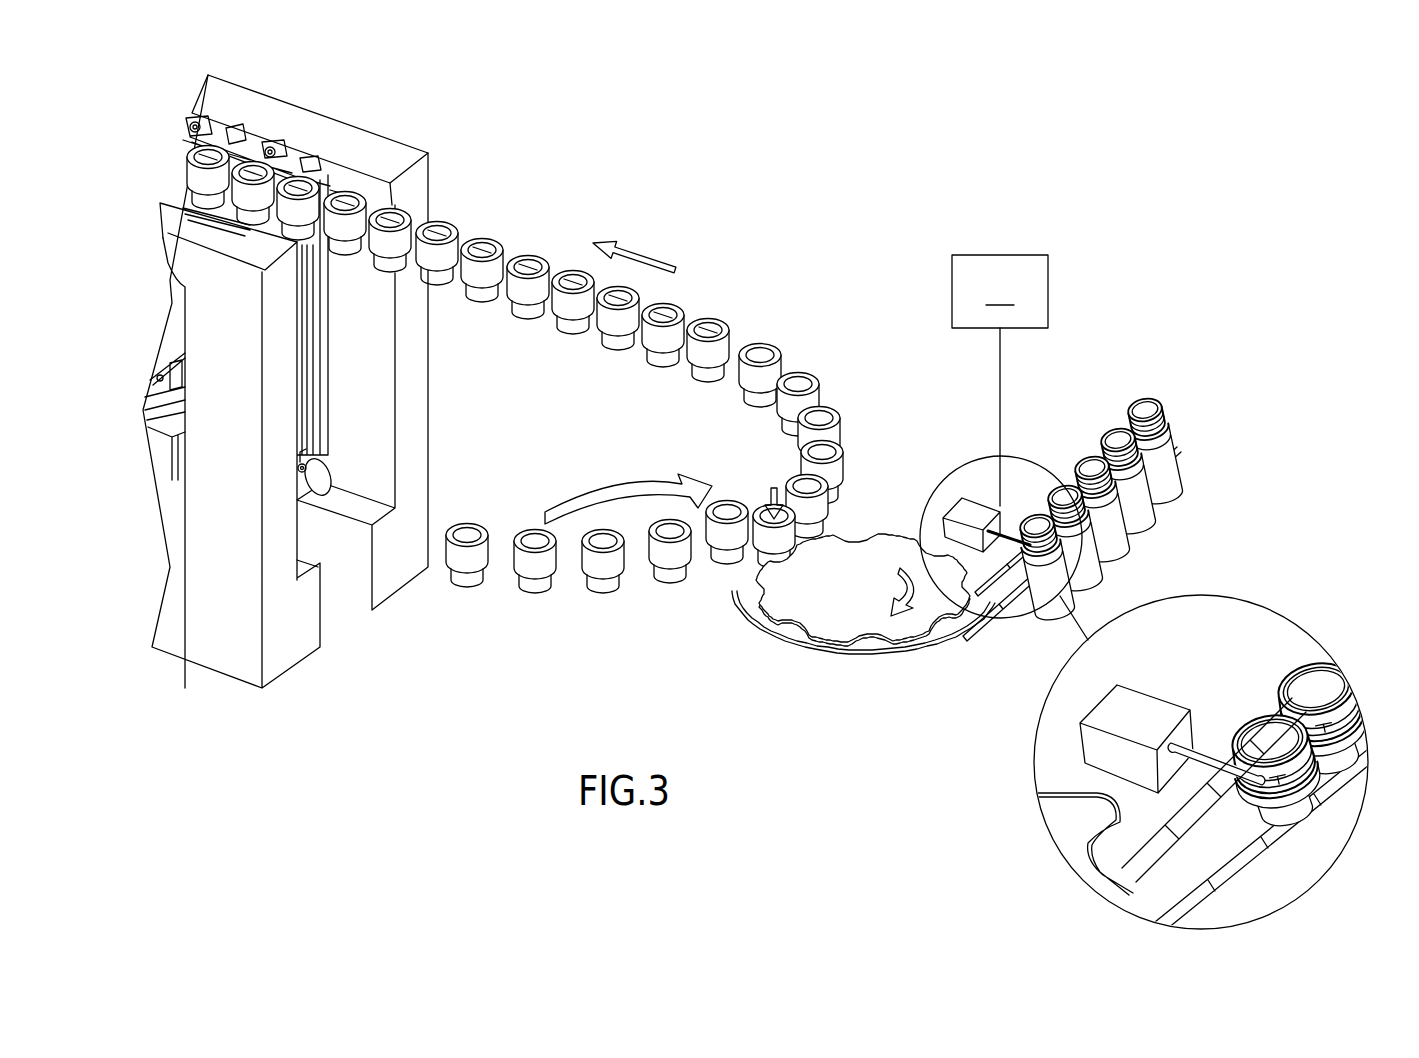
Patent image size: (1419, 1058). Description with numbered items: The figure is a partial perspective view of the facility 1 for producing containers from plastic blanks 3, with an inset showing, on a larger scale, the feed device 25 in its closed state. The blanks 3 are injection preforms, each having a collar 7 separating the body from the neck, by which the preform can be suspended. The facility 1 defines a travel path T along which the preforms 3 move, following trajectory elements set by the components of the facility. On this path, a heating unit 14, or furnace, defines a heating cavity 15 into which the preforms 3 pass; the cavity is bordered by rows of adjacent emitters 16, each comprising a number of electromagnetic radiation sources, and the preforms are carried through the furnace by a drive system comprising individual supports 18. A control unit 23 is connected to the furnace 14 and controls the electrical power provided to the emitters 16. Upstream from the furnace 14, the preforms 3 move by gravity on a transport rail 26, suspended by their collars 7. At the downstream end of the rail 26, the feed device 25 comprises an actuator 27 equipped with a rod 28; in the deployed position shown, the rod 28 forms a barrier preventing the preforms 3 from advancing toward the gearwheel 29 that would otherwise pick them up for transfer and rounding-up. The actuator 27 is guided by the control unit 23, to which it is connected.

The facility 1 is at (1112, 153).
The blanks 3 is at (1205, 667).
The collar 7 is at (1318, 778).
The heating unit 14 is at (388, 131).
The heating cavity 15 is at (258, 137).
The emitters 16 is at (275, 226).
The individual supports 18 is at (767, 348).
The travel path T is at (528, 262).
The control unit 23 is at (1000, 380).
The feed device 25 is at (1136, 532).
The transport rail 26 is at (1172, 826).
The actuator 27 is at (1160, 710).
The rod 28 is at (1206, 760).
The gearwheel 29 is at (846, 563).